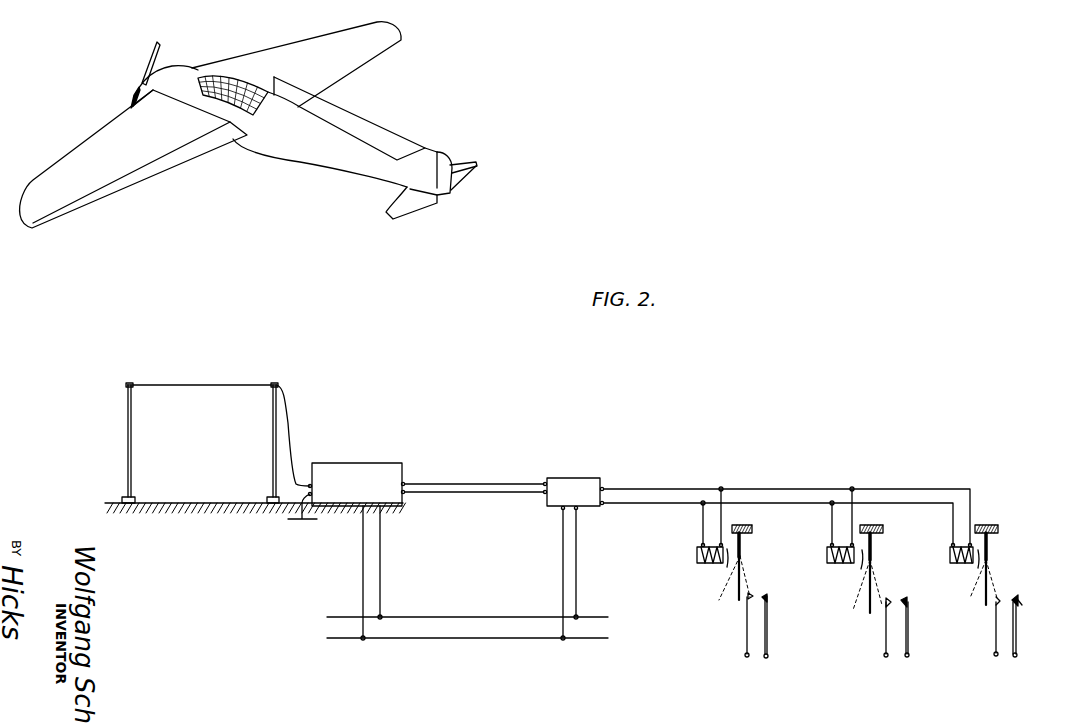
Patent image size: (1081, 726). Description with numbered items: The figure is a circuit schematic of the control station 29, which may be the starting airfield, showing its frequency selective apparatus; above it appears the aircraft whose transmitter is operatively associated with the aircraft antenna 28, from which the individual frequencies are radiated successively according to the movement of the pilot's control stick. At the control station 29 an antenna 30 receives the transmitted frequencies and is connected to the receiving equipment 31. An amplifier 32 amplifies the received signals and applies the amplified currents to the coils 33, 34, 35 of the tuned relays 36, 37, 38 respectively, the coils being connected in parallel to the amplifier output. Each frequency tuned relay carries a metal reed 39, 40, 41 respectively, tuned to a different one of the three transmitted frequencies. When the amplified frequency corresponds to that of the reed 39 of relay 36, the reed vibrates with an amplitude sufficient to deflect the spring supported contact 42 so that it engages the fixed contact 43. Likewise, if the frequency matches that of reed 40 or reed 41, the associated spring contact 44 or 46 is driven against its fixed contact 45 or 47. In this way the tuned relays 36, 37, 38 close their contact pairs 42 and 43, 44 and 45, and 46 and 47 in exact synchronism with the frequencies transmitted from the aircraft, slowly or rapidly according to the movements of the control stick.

The aircraft antenna 28 is at (360, 115).
The control station 29 is at (527, 447).
The antenna 30 is at (195, 385).
The receiving equipment 31 is at (347, 478).
The amplifier 32 is at (575, 488).
The coil 33 is at (697, 553).
The coil 34 is at (827, 555).
The coil 35 is at (950, 555).
The tuned relay 36 is at (727, 567).
The tuned relay 37 is at (862, 558).
The tuned relay 38 is at (978, 567).
The metal reed 39 is at (740, 555).
The metal reed 40 is at (875, 557).
The metal reed 41 is at (987, 555).
The spring supported contact 42 is at (747, 637).
The fixed contact 43 is at (768, 622).
The spring contact 44 is at (885, 630).
The fixed contact 45 is at (910, 637).
The spring contact 46 is at (995, 630).
The fixed contact 47 is at (1017, 637).